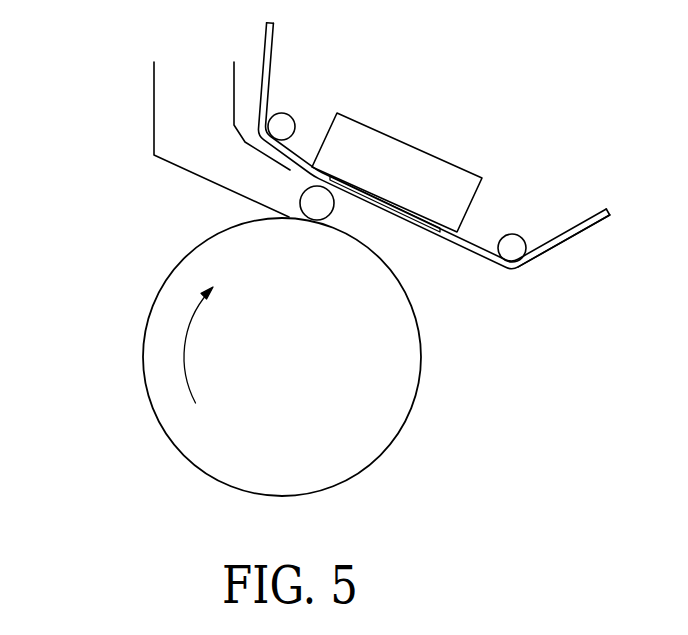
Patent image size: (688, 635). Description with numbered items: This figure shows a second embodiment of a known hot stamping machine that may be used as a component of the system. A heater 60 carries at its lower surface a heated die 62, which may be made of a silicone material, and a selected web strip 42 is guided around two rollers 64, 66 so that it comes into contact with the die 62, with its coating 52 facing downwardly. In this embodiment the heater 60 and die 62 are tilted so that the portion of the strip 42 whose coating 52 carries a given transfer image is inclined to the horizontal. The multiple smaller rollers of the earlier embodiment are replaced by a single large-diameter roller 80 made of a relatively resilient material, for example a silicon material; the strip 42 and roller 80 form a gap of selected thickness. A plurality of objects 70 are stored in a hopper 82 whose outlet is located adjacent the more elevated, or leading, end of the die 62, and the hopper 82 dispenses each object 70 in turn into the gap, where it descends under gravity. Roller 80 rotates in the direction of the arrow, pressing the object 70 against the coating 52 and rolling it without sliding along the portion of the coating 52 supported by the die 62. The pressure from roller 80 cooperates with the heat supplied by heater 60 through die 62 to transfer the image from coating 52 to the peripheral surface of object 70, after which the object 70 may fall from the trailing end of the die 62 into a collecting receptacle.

The web strip 42 is at (583, 188).
The coating 52 is at (558, 243).
The heater 60 is at (412, 162).
The heated die 62 is at (344, 180).
The roller 64 is at (282, 113).
The roller 66 is at (507, 234).
The object 70 is at (322, 208).
The large-diameter roller 80 is at (143, 365).
The hopper 82 is at (154, 108).